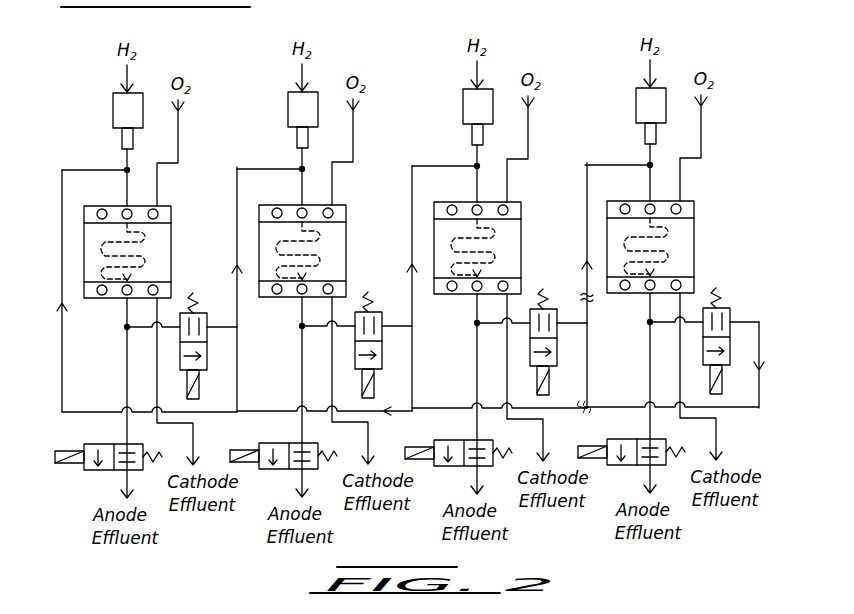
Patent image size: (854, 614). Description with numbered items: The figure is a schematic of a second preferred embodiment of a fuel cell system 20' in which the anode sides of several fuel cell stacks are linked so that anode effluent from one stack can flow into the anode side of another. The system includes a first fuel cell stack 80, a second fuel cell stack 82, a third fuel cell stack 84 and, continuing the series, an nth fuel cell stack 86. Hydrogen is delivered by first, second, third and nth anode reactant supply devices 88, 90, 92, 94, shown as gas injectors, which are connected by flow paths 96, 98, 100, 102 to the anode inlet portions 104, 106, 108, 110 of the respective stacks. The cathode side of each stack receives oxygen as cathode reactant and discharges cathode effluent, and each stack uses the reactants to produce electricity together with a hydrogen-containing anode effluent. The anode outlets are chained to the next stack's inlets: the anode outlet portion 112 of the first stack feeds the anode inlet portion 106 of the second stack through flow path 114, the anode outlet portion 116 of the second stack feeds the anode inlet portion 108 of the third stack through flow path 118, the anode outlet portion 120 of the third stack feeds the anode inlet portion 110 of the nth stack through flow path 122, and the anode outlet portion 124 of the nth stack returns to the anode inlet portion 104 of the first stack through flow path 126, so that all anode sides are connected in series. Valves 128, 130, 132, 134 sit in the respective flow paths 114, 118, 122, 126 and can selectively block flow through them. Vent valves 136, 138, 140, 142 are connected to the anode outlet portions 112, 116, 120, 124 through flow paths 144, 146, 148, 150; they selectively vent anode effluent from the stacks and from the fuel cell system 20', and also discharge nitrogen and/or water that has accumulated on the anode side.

The fuel cell system 20' is at (401, 210).
The first fuel cell stack 80 is at (165, 250).
The second fuel cell stack 82 is at (325, 251).
The third fuel cell stack 84 is at (500, 248).
The nth fuel cell stack 86 is at (673, 247).
The first anode reactant supply device 88 is at (122, 118).
The second anode reactant supply device 90 is at (284, 105).
The third anode reactant supply device 92 is at (459, 102).
The nth anode reactant supply device 94 is at (632, 101).
The flow path 96 is at (125, 169).
The flow path 98 is at (271, 170).
The flow path 100 is at (446, 166).
The flow path 102 is at (619, 165).
The anode inlet portion 104 is at (118, 190).
The anode inlet portion 106 is at (296, 198).
The anode inlet portion 108 is at (471, 195).
The anode inlet portion 110 is at (644, 194).
The anode outlet portion 112 is at (113, 313).
The anode outlet portion 116 is at (299, 312).
The anode outlet portion 120 is at (474, 309).
The anode outlet portion 124 is at (647, 308).
The flow path 114 is at (237, 213).
The flow path 118 is at (387, 288).
The flow path 122 is at (556, 285).
The flow path 126 is at (684, 381).
The valve 128 is at (204, 363).
The valve 130 is at (369, 345).
The valve 132 is at (544, 342).
The valve 134 is at (714, 335).
The vent valve 136 is at (85, 470).
The vent valve 138 is at (275, 446).
The vent valve 140 is at (452, 443).
The vent valve 142 is at (622, 442).
The flow path 144 is at (127, 400).
The flow path 146 is at (280, 411).
The flow path 148 is at (452, 408).
The flow path 150 is at (625, 407).